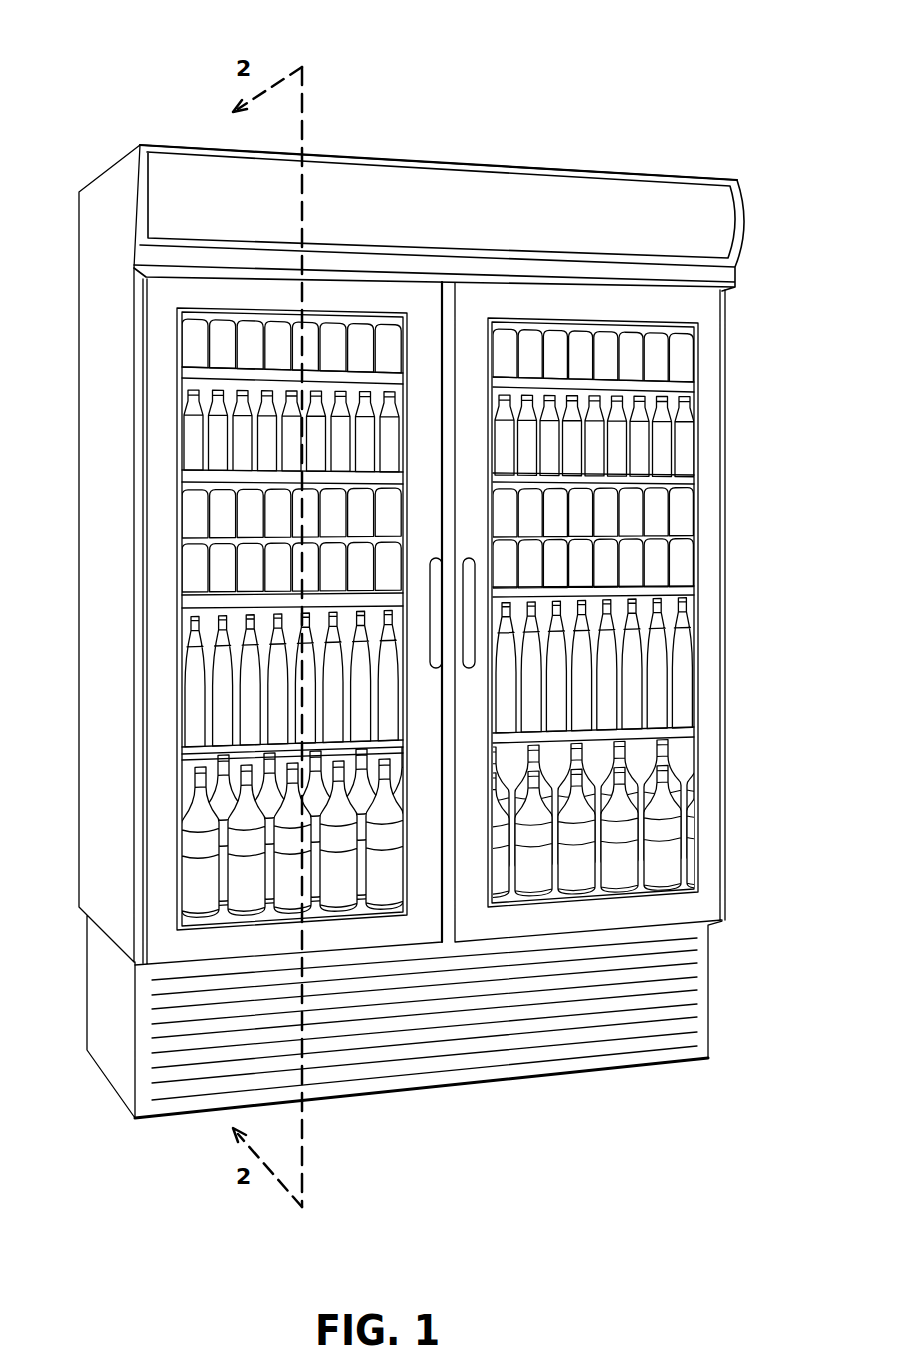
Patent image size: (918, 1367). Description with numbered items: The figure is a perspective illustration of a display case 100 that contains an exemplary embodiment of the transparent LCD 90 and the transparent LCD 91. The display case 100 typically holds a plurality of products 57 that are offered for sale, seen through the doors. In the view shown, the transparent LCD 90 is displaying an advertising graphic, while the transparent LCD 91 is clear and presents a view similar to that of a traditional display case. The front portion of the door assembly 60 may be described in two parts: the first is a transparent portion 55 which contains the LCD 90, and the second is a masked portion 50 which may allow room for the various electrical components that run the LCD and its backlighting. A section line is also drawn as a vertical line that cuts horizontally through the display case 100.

The display case 100 is at (690, 81).
The masked portion 50 is at (160, 442).
The products 57 is at (227, 680).
The transparent portion 55 is at (225, 702).
The transparent LCD 91 is at (222, 755).
The door assembly 60 is at (123, 888).
The transparent LCD 90 is at (685, 592).